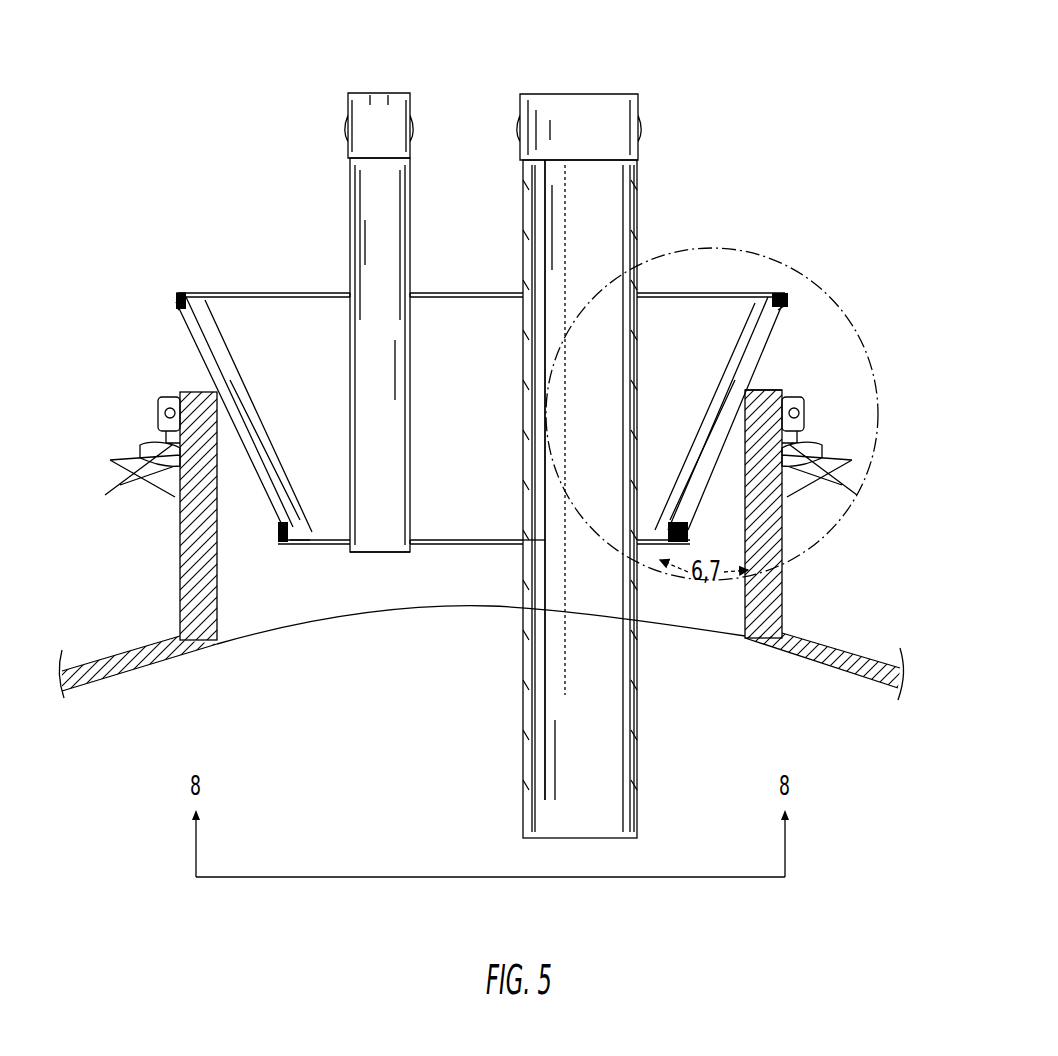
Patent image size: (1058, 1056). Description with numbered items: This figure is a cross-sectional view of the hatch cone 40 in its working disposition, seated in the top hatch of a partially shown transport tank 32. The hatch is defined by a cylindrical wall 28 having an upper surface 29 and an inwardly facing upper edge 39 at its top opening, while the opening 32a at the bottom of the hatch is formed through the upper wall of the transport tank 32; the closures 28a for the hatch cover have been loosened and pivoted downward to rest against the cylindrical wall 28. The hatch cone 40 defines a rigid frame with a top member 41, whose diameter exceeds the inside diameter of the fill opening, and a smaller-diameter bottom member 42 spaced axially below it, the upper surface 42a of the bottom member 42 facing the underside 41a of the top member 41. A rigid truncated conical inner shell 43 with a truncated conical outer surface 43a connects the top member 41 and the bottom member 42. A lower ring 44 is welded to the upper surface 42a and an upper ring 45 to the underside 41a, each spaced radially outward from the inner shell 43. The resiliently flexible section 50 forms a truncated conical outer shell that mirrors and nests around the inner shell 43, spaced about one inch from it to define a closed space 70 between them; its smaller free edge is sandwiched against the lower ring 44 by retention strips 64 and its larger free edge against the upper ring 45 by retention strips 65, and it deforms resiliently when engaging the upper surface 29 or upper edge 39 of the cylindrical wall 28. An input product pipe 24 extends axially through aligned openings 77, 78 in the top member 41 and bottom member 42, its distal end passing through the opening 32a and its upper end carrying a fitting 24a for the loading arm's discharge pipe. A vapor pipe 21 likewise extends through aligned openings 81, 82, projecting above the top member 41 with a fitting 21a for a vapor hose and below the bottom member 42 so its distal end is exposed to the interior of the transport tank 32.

The hatch cone 40 is at (185, 100).
The vapor pipe 21 is at (350, 205).
The fitting 21a is at (405, 95).
The input product pipe 24 is at (640, 220).
The fitting 24a is at (640, 140).
The top member 41 is at (452, 296).
The underside 41a is at (470, 328).
The bottom member 42 is at (455, 546).
The upper surface 42a is at (485, 538).
The inner shell 43 is at (248, 385).
The truncated conical outer surface 43a is at (235, 370).
The lower ring 44 is at (300, 546).
The upper ring 45 is at (185, 290).
The resiliently flexible section 50 is at (230, 375).
The retention strips 64 is at (278, 528).
The retention strips 65 is at (175, 298).
The closed space 70 is at (272, 452).
The opening 77 is at (535, 292).
The opening 78 is at (545, 545).
The opening 81 is at (350, 288).
The opening 82 is at (353, 550).
The inwardly facing upper edge 39 is at (222, 397).
The cylindrical wall 28 is at (772, 597).
The closures 28a is at (165, 452).
The upper surface 29 is at (780, 388).
The transport tank 32 is at (110, 660).
The opening 32a is at (315, 625).